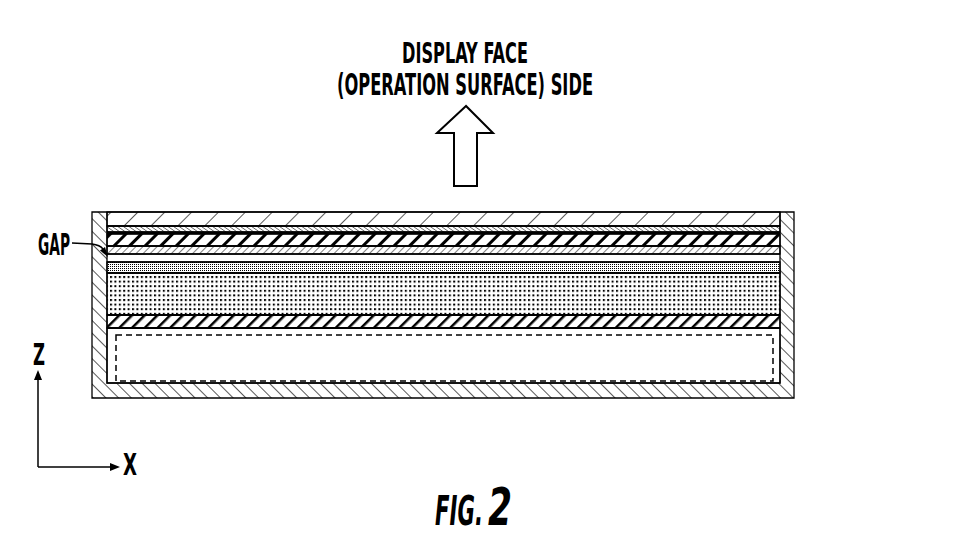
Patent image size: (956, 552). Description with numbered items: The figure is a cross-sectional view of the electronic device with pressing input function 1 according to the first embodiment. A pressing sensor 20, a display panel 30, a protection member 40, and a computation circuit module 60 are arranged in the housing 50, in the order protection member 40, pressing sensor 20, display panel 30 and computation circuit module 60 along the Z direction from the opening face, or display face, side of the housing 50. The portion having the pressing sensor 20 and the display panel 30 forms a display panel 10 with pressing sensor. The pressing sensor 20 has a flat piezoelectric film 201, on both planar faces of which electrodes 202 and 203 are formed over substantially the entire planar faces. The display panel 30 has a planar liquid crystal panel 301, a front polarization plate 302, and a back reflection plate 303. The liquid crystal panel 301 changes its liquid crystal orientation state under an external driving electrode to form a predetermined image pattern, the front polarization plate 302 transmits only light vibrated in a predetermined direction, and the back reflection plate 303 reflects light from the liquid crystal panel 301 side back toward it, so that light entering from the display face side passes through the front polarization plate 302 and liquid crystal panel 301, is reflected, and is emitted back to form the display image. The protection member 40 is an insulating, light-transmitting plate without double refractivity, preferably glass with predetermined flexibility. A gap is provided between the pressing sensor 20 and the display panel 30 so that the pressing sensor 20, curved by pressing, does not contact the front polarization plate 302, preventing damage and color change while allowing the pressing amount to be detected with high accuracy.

The electronic device with pressing input function 1 is at (502, 258).
The display panel with pressing sensor 10 is at (891, 208).
The pressing sensor 20 is at (860, 200).
The display panel 30 is at (860, 285).
The protection member 40 is at (726, 214).
The housing 50 is at (790, 367).
The computation circuit module 60 is at (618, 384).
The piezoelectric film 201 is at (773, 243).
The electrode 202 is at (782, 223).
The electrode 203 is at (780, 253).
The liquid crystal panel 301 is at (780, 300).
The front polarization plate 302 is at (780, 273).
The back reflection plate 303 is at (780, 327).